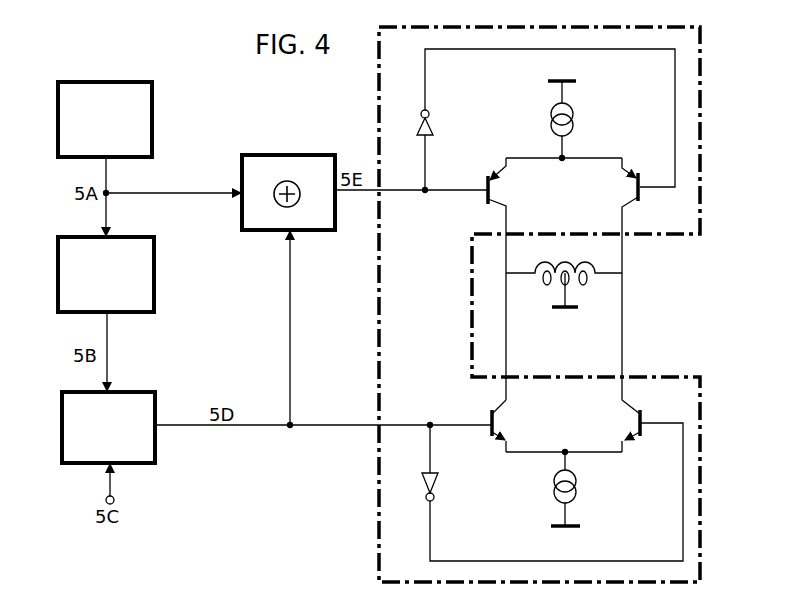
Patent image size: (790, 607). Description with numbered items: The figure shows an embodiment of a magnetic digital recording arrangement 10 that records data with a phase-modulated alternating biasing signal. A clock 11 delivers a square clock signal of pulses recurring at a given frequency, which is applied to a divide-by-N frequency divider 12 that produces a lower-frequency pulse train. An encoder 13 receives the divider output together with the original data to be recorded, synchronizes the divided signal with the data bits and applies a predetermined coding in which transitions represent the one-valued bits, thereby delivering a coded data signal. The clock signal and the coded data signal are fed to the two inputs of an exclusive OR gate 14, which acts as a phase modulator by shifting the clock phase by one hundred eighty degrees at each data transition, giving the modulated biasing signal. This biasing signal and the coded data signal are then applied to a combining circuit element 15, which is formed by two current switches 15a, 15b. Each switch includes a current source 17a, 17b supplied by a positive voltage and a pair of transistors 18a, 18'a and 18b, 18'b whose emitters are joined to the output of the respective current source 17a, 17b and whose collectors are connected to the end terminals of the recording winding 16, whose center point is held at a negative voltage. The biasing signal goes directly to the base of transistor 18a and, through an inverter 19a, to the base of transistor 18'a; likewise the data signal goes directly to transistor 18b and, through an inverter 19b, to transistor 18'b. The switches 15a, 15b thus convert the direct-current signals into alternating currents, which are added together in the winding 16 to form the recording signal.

The digital recording arrangement 10 is at (208, 540).
The clock 11 is at (58, 102).
The frequency divider 12 is at (58, 256).
The encoder 13 is at (62, 420).
The exclusive OR gate 14 is at (322, 155).
The combining circuit element 15 is at (382, 321).
The current switch 15a is at (415, 80).
The current switch 15b is at (416, 528).
The recording winding 16 is at (580, 282).
The current source 17a is at (594, 125).
The current source 17b is at (594, 494).
The transistor 18a is at (488, 180).
The transistor 18'a is at (644, 269).
The transistor 18b is at (490, 428).
The transistor 18'b is at (647, 437).
The inverter 19a is at (448, 110).
The inverter 19b is at (452, 463).